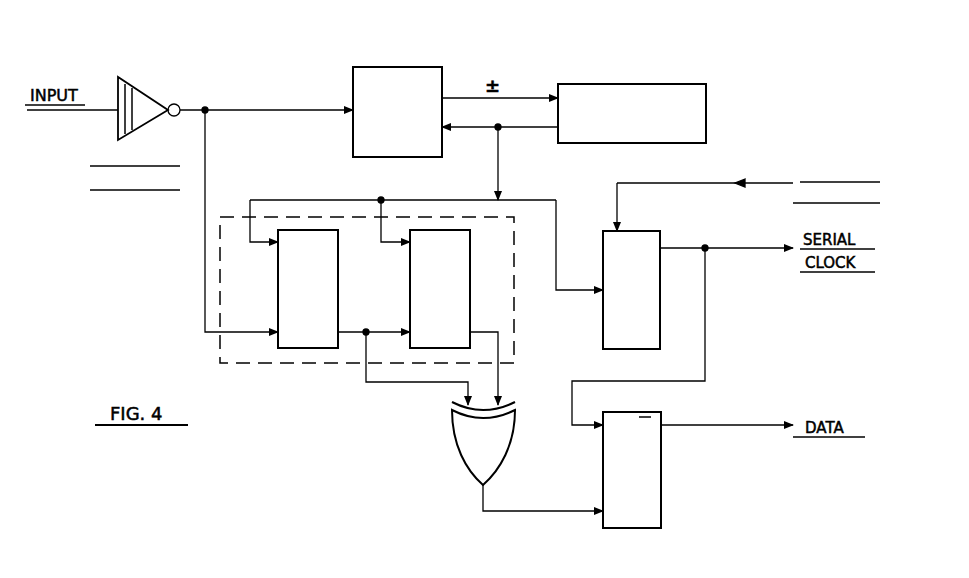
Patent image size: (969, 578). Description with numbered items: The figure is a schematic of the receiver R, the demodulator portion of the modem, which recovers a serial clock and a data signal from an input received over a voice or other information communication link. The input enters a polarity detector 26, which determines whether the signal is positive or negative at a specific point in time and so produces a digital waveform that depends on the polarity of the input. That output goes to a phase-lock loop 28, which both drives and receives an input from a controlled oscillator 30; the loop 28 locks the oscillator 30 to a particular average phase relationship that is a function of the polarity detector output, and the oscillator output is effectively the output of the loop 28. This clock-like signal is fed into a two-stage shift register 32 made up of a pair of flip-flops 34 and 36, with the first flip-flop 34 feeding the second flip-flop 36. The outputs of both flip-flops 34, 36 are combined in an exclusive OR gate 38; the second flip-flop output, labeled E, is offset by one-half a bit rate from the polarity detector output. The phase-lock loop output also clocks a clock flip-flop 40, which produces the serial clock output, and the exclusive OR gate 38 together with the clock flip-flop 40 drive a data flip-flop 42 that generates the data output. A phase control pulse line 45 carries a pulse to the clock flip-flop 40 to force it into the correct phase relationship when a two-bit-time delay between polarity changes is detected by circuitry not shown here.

The polarity detector 26 is at (143, 107).
The phase-lock loop 28 is at (388, 73).
The controlled oscillator 30 is at (690, 83).
The two-stage shift register 32 is at (220, 275).
The flip-flop 34 is at (330, 245).
The flip-flop 36 is at (445, 265).
The exclusive OR gate 38 is at (480, 430).
The clock flip-flop 40 is at (623, 253).
The data flip-flop 42 is at (642, 443).
The phase control pulse line 45 is at (706, 185).
The signal E is at (500, 390).
The receiver R is at (473, 60).